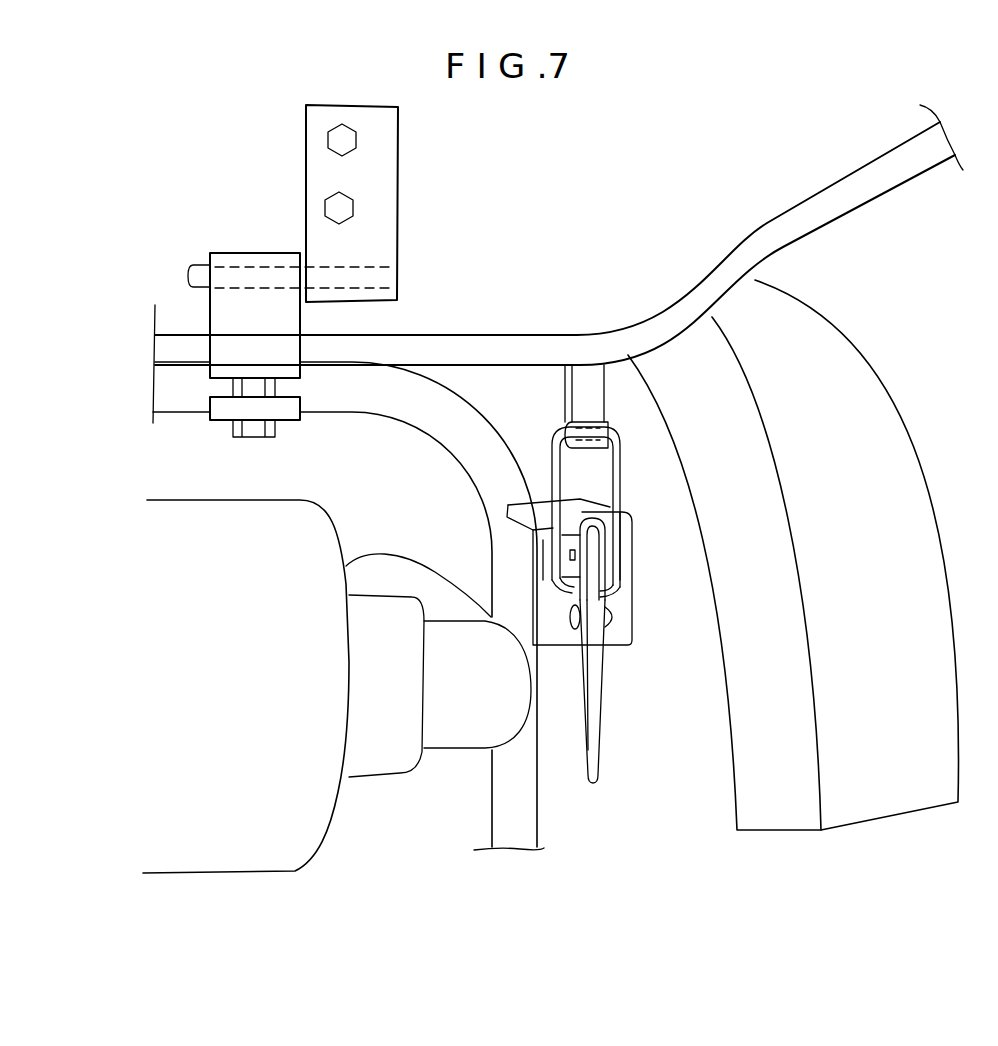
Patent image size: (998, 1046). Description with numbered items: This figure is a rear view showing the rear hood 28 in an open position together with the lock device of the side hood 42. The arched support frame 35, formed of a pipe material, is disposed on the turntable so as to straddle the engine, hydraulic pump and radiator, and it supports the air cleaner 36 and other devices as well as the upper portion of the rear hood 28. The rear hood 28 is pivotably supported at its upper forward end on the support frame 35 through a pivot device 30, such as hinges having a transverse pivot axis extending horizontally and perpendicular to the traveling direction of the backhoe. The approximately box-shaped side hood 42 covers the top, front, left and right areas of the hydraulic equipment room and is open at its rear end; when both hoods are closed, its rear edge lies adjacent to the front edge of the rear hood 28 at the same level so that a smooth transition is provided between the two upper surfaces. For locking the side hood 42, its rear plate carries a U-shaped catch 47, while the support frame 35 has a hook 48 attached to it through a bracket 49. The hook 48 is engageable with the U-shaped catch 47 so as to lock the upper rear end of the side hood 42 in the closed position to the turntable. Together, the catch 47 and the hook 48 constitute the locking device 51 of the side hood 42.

The rear hood 28 is at (840, 208).
The pivot device 30 is at (245, 246).
The support frame 35 is at (452, 428).
The air cleaner 36 is at (316, 834).
The side hood 42 is at (748, 775).
The catch 47 is at (597, 397).
The hook 48 is at (630, 568).
The bracket 49 is at (622, 630).
The locking device 51 is at (645, 528).